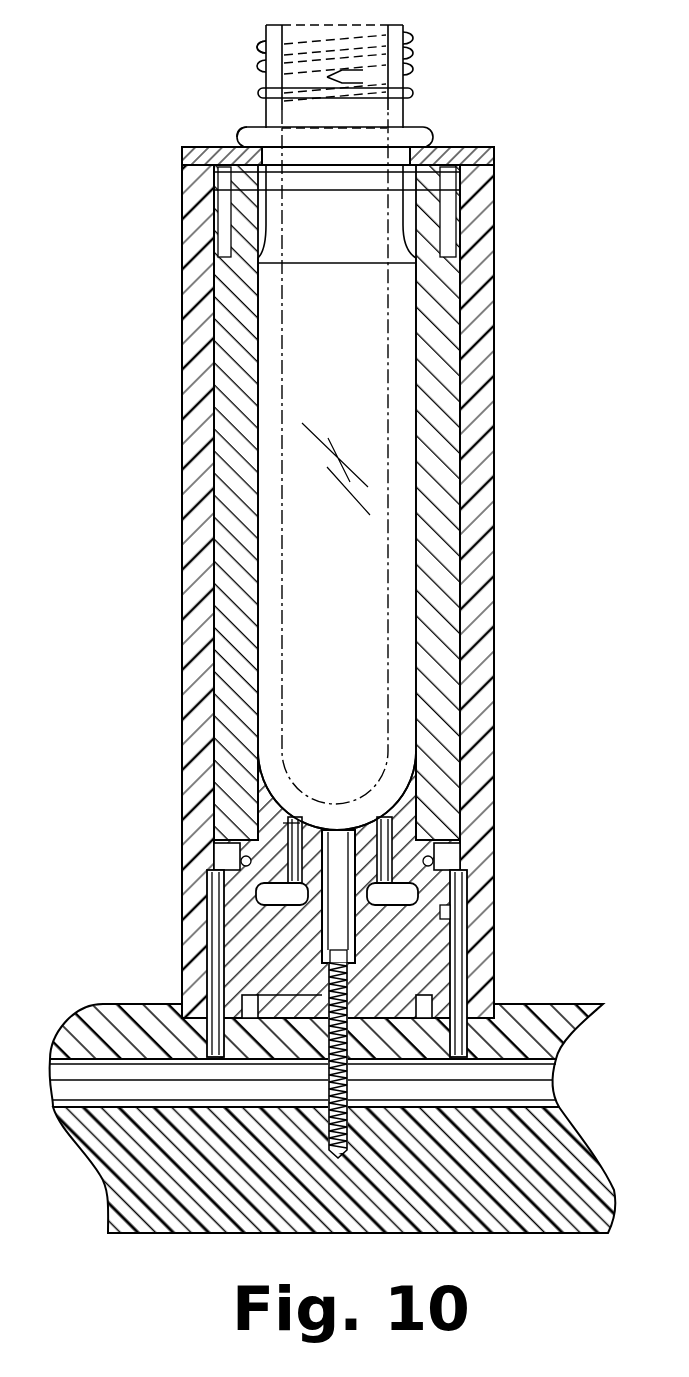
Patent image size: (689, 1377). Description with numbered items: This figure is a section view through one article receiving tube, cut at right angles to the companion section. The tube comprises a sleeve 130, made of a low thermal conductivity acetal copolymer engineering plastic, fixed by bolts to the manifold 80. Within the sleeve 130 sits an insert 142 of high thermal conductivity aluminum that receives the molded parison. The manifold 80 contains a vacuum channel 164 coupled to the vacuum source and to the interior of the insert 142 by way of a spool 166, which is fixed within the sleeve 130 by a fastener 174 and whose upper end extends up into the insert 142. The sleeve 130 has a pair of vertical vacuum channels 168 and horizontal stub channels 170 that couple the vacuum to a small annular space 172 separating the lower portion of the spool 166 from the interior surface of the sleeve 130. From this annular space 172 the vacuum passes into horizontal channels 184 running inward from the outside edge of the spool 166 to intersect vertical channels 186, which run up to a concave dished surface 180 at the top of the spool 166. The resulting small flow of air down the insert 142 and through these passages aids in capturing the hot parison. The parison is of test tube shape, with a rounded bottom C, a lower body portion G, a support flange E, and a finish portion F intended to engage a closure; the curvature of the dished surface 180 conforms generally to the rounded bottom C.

The manifold 80 is at (568, 1162).
The vacuum channel 164 is at (530, 1088).
The sleeve 130 is at (475, 684).
The insert 142 is at (440, 748).
The horizontal stub channels 170 is at (213, 857).
The vertical vacuum channels 168 is at (220, 927).
The vertical channels 186 is at (292, 830).
The small annular space 172 is at (190, 903).
The horizontal channels 184 is at (455, 893).
The spool 166 is at (478, 912).
The fastener 174 is at (257, 995).
The concave dished surface 180 is at (352, 822).
The lower body portion G is at (267, 521).
The finish portion F is at (264, 46).
The support flange E is at (250, 133).
The rounded bottom C is at (290, 822).